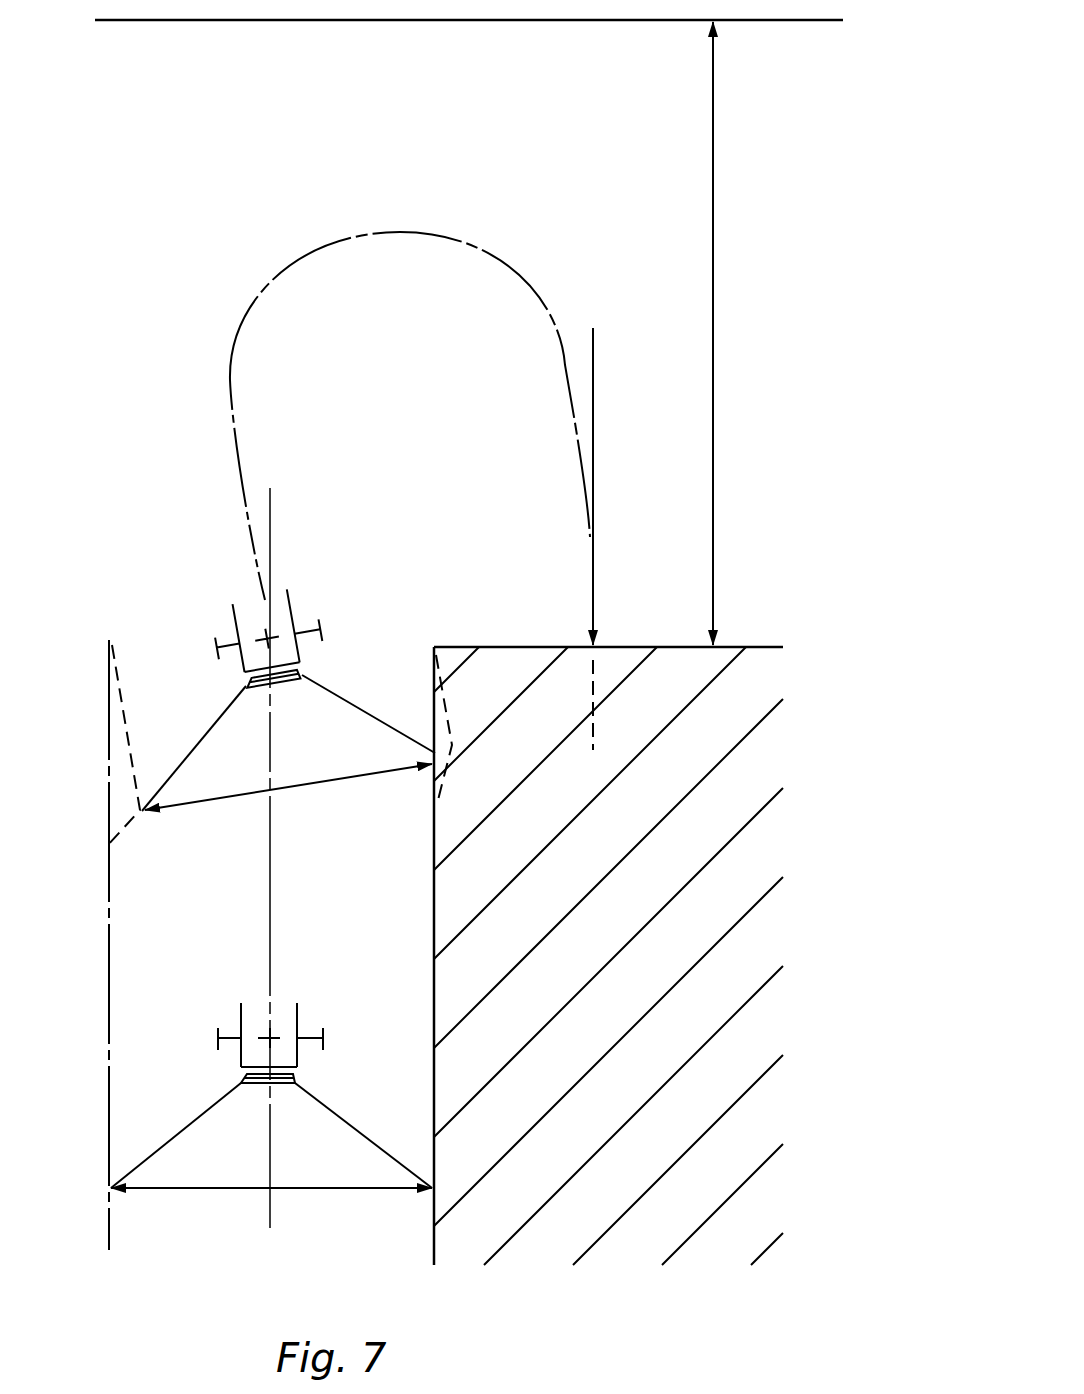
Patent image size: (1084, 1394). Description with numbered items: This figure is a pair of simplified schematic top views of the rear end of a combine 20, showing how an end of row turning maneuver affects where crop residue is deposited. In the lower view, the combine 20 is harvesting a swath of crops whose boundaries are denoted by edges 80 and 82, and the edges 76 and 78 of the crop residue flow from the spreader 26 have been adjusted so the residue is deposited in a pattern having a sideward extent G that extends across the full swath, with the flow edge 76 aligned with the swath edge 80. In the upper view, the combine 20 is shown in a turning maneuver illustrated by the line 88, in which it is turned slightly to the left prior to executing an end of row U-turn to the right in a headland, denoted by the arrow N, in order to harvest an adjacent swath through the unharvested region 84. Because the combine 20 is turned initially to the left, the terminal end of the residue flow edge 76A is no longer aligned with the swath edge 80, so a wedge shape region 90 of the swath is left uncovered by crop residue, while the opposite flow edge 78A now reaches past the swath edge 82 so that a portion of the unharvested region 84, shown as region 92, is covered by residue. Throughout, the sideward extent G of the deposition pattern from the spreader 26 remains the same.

The combine 20 is at (290, 599).
The spreader 26 is at (291, 687).
The edge of crop residue flow 76 is at (200, 1112).
The edge of crop residue flow 76A is at (195, 748).
The edge of crop residue flow 78 is at (338, 1116).
The edge of crop residue flow 78A is at (345, 700).
The edge of swath 80 is at (108, 1062).
The edge of swath 82 is at (447, 1056).
The region of unharvested crop 84 is at (505, 660).
The turning maneuver line 88 is at (448, 236).
The wedge shape region 90 is at (126, 798).
The region covered by crop residue 92 is at (446, 744).
The sideward extent G is at (352, 784).
The arrow denoting end of row U-turn N is at (716, 386).